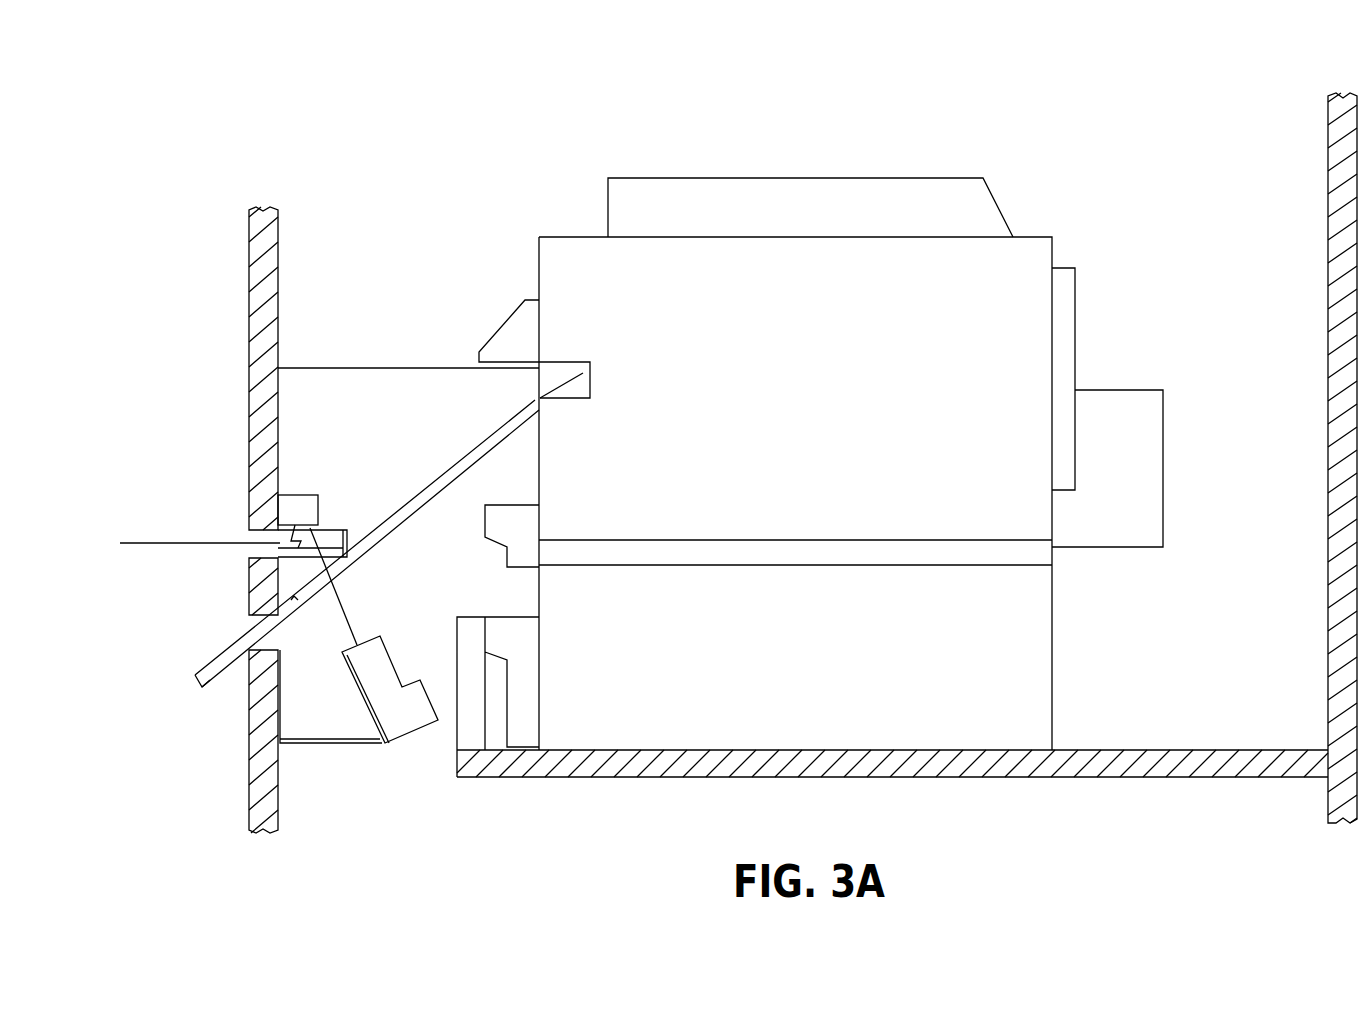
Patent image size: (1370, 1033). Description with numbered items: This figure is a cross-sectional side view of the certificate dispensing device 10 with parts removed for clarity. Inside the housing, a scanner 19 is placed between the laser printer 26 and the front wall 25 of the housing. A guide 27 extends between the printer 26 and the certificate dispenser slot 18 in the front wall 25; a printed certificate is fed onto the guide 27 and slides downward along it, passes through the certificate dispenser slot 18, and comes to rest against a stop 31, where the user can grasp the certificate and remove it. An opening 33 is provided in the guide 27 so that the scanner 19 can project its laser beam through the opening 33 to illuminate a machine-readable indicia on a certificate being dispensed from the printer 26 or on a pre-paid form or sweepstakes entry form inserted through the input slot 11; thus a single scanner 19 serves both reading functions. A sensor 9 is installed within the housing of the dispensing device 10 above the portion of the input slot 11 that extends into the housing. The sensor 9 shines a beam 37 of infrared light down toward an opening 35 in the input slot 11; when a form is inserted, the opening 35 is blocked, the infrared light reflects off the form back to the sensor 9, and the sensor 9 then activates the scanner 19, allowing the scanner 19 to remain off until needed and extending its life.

The dispensing device 10 is at (1075, 107).
The laser printer 26 is at (819, 431).
The front wall 25 is at (249, 358).
The certificate dispenser slot 18 is at (252, 594).
The sensor 9 is at (307, 493).
The opening 35 is at (300, 522).
The beam 37 is at (282, 549).
The input slot 11 is at (280, 543).
The guide 27 is at (378, 548).
The stop 31 is at (196, 677).
The opening 33 is at (352, 615).
The scanner 19 is at (398, 718).